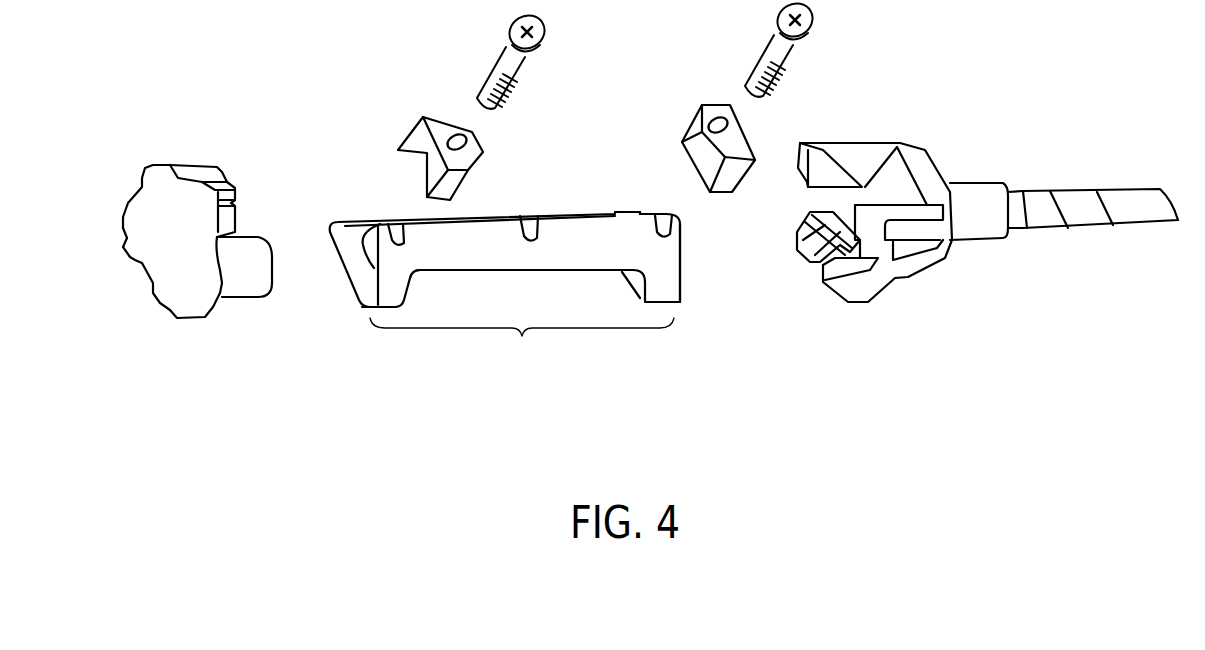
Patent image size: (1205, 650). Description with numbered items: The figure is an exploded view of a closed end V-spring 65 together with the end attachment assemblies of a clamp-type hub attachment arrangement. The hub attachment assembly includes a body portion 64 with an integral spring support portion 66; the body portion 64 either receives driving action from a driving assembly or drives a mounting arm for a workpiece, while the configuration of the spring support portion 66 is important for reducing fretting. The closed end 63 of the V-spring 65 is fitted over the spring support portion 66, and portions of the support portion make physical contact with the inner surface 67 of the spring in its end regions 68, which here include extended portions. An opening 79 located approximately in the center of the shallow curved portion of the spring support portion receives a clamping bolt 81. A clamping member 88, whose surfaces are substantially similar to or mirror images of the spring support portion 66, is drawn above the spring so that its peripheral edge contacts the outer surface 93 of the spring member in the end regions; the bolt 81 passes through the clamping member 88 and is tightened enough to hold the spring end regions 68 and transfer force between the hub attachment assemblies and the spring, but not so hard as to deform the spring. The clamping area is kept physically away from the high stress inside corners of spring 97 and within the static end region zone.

The closed end 63 is at (344, 289).
The body portion 64 is at (930, 165).
The V-spring 65 is at (522, 346).
The spring support portion 66 is at (805, 262).
The inner surface 67 is at (605, 238).
The end regions 68 is at (385, 305).
The opening 79 is at (682, 227).
The clamping bolt 81 is at (522, 66).
The clamping member 88 is at (435, 117).
The outer surface 93 is at (677, 263).
The inside corners of spring 97 is at (413, 280).